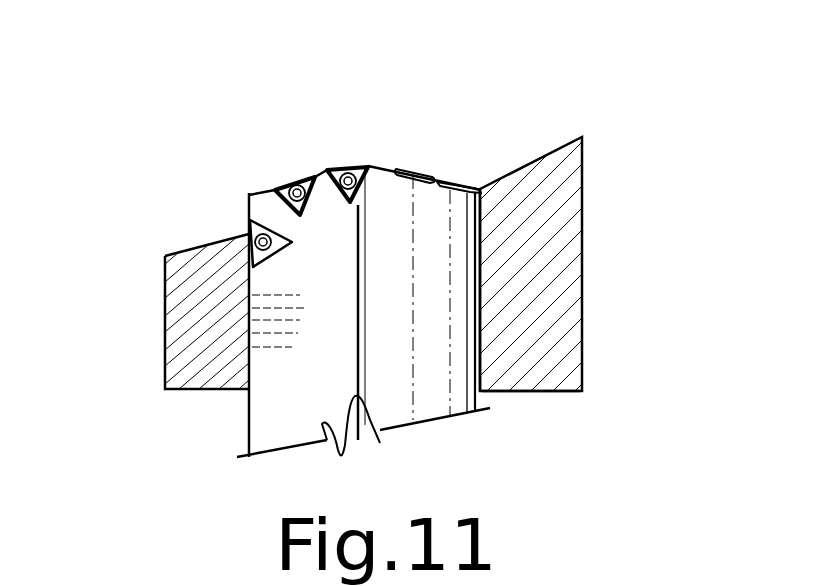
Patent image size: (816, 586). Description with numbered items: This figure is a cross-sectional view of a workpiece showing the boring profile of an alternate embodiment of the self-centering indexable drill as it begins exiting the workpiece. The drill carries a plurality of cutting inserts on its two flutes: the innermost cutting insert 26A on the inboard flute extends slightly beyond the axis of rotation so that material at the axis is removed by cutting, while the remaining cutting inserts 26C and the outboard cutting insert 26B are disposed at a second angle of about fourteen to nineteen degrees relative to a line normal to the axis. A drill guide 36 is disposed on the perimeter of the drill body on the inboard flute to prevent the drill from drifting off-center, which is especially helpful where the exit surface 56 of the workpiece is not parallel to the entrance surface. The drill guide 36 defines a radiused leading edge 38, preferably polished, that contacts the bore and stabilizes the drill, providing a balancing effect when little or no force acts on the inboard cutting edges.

The innermost cutting insert 26A is at (327, 167).
The cutting insert 26B is at (460, 185).
The cutting insert 26C is at (295, 170).
The drill guide 36 is at (265, 205).
The radiused leading edge 38 is at (248, 228).
The exit surface 56 is at (572, 160).